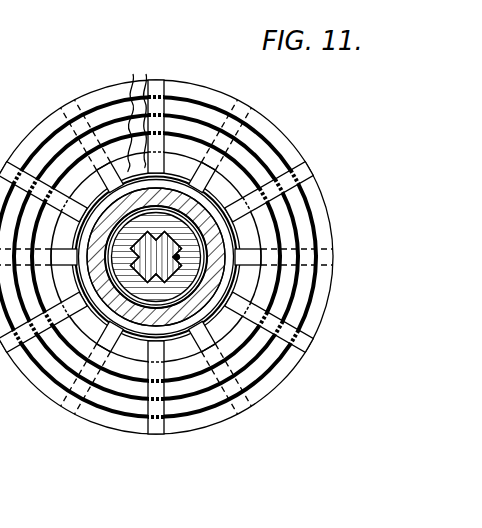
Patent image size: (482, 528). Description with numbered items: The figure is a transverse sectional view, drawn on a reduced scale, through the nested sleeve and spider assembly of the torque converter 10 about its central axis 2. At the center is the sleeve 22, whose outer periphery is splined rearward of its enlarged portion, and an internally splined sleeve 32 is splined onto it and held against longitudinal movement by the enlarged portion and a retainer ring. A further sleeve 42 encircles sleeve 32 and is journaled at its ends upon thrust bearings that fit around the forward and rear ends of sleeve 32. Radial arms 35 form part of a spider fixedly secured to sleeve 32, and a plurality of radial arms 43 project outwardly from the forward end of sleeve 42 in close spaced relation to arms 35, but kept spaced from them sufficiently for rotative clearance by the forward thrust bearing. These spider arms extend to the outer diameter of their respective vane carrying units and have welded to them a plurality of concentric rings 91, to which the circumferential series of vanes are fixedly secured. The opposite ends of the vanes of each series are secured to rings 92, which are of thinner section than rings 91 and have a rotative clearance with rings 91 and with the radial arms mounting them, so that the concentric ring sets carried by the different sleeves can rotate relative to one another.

The shaft core 2 is at (242, 257).
The rotor assembly 10 is at (166, 272).
The sleeve 22 is at (228, 257).
The internally splined sleeve 32 is at (208, 242).
The radial arms 35 is at (92, 391).
The sleeve 42 is at (205, 222).
The radial arms 43 is at (149, 409).
The concentric rings 91 is at (191, 113).
The rings 92 is at (143, 112).